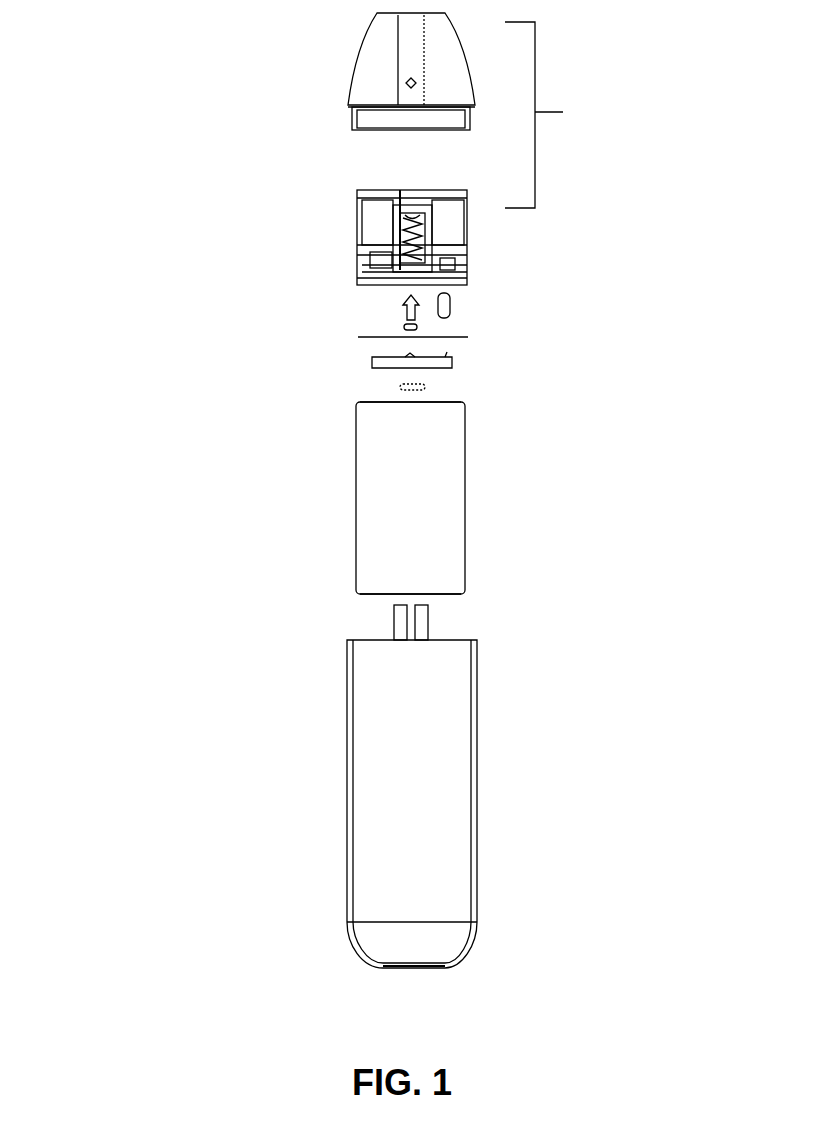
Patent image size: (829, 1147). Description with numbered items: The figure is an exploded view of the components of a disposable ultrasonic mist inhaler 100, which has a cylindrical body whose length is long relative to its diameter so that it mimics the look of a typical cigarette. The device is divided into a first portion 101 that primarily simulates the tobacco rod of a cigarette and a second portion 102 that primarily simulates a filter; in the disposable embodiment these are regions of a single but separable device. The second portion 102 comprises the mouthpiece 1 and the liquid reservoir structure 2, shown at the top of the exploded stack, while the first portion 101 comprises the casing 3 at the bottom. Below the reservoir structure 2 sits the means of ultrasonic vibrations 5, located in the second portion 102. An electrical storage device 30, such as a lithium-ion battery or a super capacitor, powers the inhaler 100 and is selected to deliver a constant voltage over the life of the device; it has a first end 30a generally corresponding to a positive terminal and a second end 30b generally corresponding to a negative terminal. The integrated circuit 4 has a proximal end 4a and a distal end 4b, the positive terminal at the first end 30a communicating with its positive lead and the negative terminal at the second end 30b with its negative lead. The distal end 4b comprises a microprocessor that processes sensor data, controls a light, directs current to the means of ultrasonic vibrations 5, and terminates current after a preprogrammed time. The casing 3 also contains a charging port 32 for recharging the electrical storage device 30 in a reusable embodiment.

The ultrasonic mist inhaler 100 is at (212, 100).
The mouthpiece 1 is at (348, 85).
The liquid reservoir structure 2 is at (305, 225).
The means of ultrasonic vibrations 5 is at (382, 258).
The integrated circuit 4 is at (355, 362).
The proximal end 4a is at (462, 337).
The distal end 4b is at (462, 340).
The electrical storage device 30 is at (322, 527).
The first end 30a is at (465, 403).
The second end 30b is at (465, 594).
The charging port 32 is at (345, 623).
The casing 3 is at (320, 803).
The first portion 101 is at (454, 764).
The second portion 102 is at (426, 149).